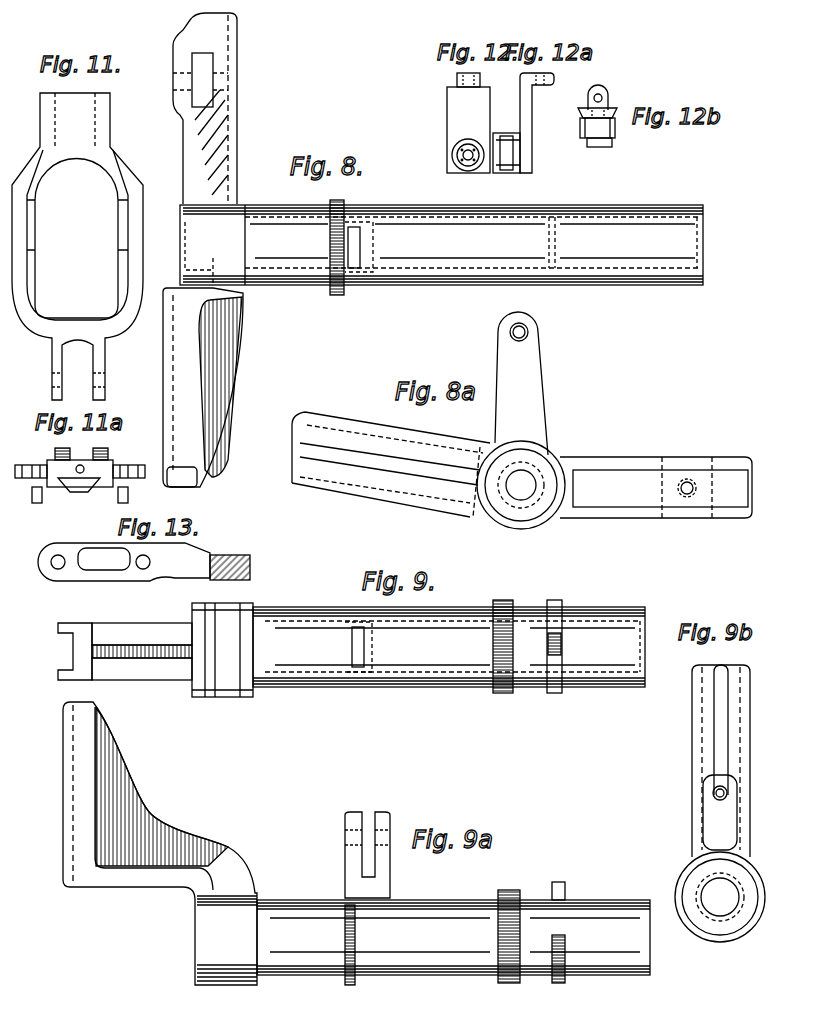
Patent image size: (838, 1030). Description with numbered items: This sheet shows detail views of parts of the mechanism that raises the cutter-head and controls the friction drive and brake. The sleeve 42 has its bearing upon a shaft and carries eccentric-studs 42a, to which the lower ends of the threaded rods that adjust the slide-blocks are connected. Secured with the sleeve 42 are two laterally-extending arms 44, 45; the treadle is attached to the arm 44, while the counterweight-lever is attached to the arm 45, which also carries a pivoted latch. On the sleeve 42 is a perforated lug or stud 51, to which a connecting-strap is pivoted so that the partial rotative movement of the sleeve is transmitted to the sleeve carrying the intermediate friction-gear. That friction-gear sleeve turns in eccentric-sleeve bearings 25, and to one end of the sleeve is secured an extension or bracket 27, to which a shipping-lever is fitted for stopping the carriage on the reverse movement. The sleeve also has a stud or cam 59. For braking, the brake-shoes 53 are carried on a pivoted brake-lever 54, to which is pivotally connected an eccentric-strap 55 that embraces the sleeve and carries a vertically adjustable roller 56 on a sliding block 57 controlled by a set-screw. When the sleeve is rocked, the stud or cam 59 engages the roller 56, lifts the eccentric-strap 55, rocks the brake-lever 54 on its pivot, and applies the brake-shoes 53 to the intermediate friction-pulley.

In FIG. 9, the eccentric-sleeve bearings 25 is at (307, 688).
In FIG. 9A, the eccentric-sleeve bearings 25 is at (293, 978).
In FIG. 9B, the eccentric-sleeve bearings 25 is at (762, 905).
In FIG. 9, the extension or bracket 27 is at (155, 650).
In FIG. 9A, the extension or bracket 27 is at (226, 843).
In FIG. 9B, the extension or bracket 27 is at (740, 752).
In FIG. 8, the sleeve 42 is at (441, 245).
In FIG. 8A, the sleeve 42 is at (520, 528).
In FIG. 8A, the eccentric-studs 42a is at (521, 485).
In FIG. 8, the arm 44 is at (193, 400).
In FIG. 8A, the arm 44 is at (417, 437).
In FIG. 8, the arm 45 is at (218, 147).
In FIG. 8A, the arm 45 is at (630, 460).
In FIG. 8, the perforated lug or stud 51 is at (332, 246).
In FIG. 8A, the perforated lug or stud 51 is at (532, 407).
In FIG. 13, the brake-shoes 53 is at (250, 570).
In FIG. 13, the brake-lever 54 is at (150, 560).
In FIG. 11, the eccentric-strap 55 is at (77, 246).
In FIG. 11A, the eccentric-strap 55 is at (80, 478).
In FIG. 12, the roller 56 is at (472, 172).
In FIG. 12A, the roller 56 is at (506, 173).
In FIG. 12B, the roller 56 is at (581, 130).
In FIG. 12, the sliding block 57 is at (468, 123).
In FIG. 12A, the sliding block 57 is at (526, 102).
In FIG. 12B, the sliding block 57 is at (610, 110).
In FIG. 9A, the stud or cam 59 is at (572, 922).